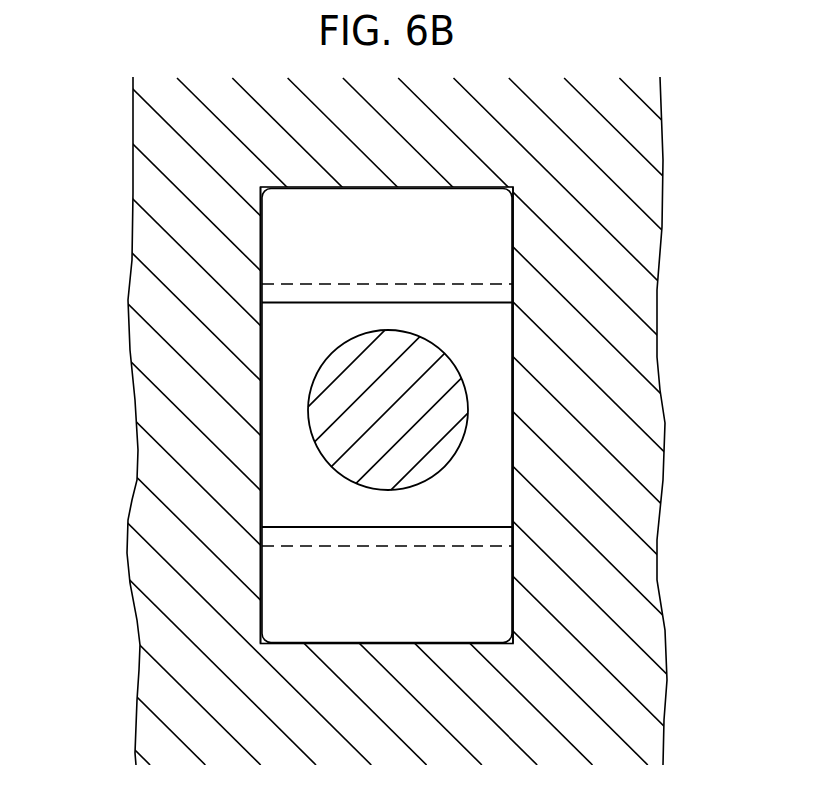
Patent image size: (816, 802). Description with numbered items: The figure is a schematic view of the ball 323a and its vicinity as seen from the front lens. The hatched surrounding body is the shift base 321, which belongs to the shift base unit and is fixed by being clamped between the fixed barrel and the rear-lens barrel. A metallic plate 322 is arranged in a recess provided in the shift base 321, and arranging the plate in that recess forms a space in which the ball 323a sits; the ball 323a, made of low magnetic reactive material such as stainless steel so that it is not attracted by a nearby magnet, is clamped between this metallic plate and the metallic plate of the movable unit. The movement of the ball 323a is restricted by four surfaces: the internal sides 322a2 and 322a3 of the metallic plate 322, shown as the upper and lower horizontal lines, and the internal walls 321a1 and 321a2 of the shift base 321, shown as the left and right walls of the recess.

The shift base 321 is at (625, 642).
The metallic plate 322 is at (465, 242).
The internal side of the metallic plate 322a2 is at (459, 304).
The internal side of the metallic plate 322a3 is at (467, 524).
The internal wall of the shift base 321a1 is at (272, 398).
The internal wall of the shift base 321a2 is at (503, 397).
The ball 323a is at (350, 385).